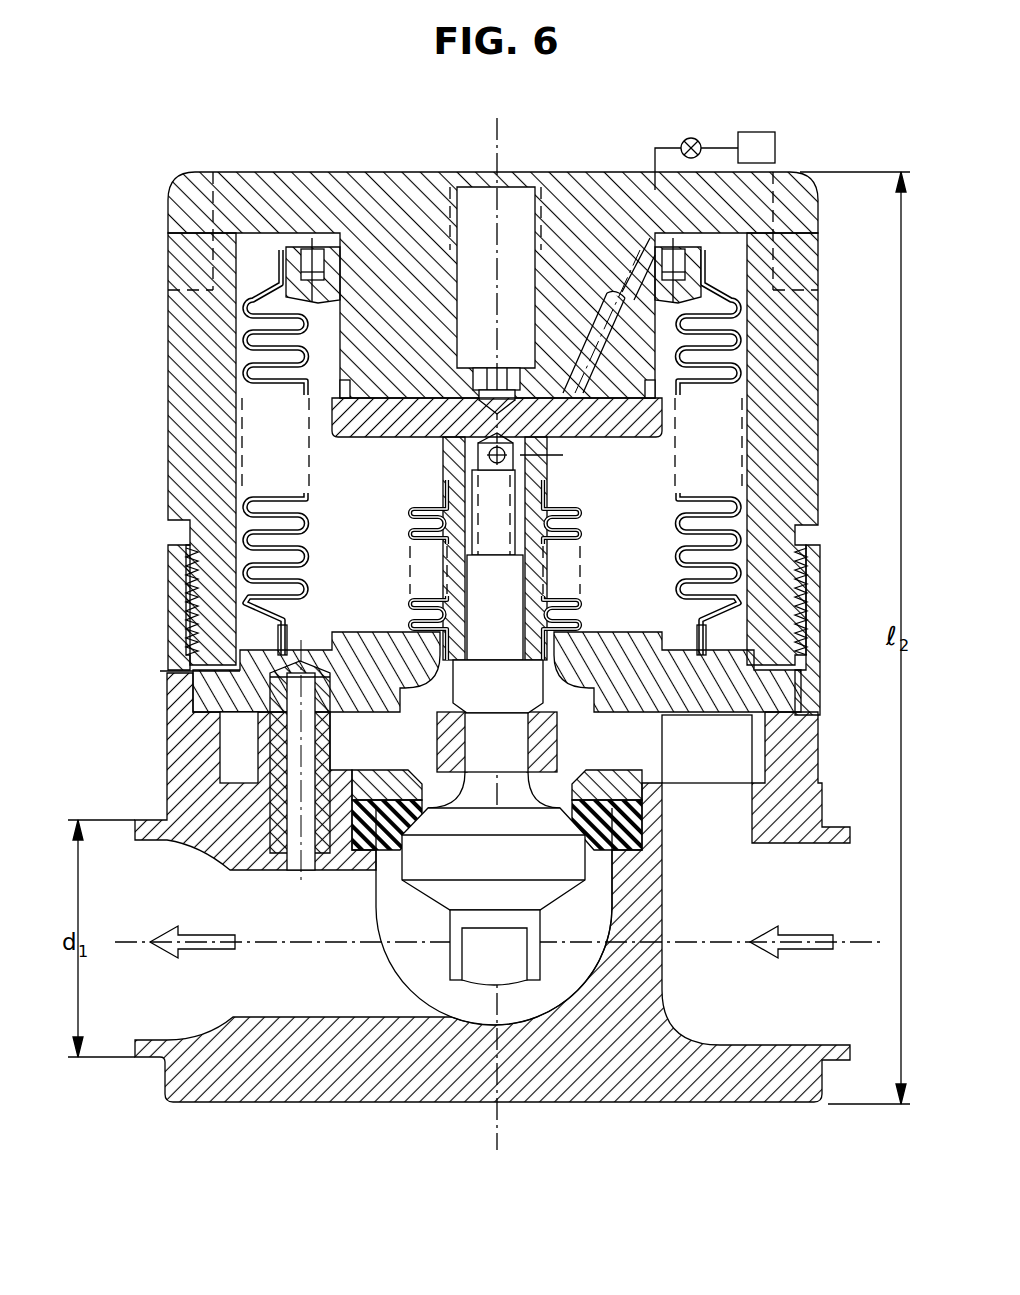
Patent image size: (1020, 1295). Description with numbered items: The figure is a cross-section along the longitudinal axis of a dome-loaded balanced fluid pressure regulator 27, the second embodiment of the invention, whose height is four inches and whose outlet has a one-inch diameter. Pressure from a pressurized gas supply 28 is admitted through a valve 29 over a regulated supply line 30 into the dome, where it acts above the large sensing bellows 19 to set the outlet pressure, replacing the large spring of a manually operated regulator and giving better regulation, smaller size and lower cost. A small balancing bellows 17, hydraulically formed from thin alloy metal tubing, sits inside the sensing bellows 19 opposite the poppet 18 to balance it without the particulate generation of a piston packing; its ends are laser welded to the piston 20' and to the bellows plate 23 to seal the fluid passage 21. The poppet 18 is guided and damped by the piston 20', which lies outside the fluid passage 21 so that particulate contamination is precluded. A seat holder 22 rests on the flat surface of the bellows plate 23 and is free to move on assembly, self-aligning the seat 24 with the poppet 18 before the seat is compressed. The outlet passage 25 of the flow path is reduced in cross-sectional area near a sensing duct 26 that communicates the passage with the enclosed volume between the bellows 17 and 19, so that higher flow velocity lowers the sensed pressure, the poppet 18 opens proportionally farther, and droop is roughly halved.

The balancing bellows 17 is at (585, 533).
The poppet 18 is at (420, 860).
The sensing bellows 19 is at (240, 528).
The piston 20' is at (610, 417).
The fluid passage 21 is at (768, 1025).
The seat holder 22 is at (655, 808).
The bellows plate 23 is at (730, 690).
The seat 24 is at (640, 837).
The outlet passage 25 is at (253, 1003).
The sensing duct 26 is at (258, 726).
The regulator 27 is at (150, 236).
The pressurized gas supply 28 is at (776, 144).
The valve 29 is at (693, 138).
The regulated supply line 30 is at (655, 146).